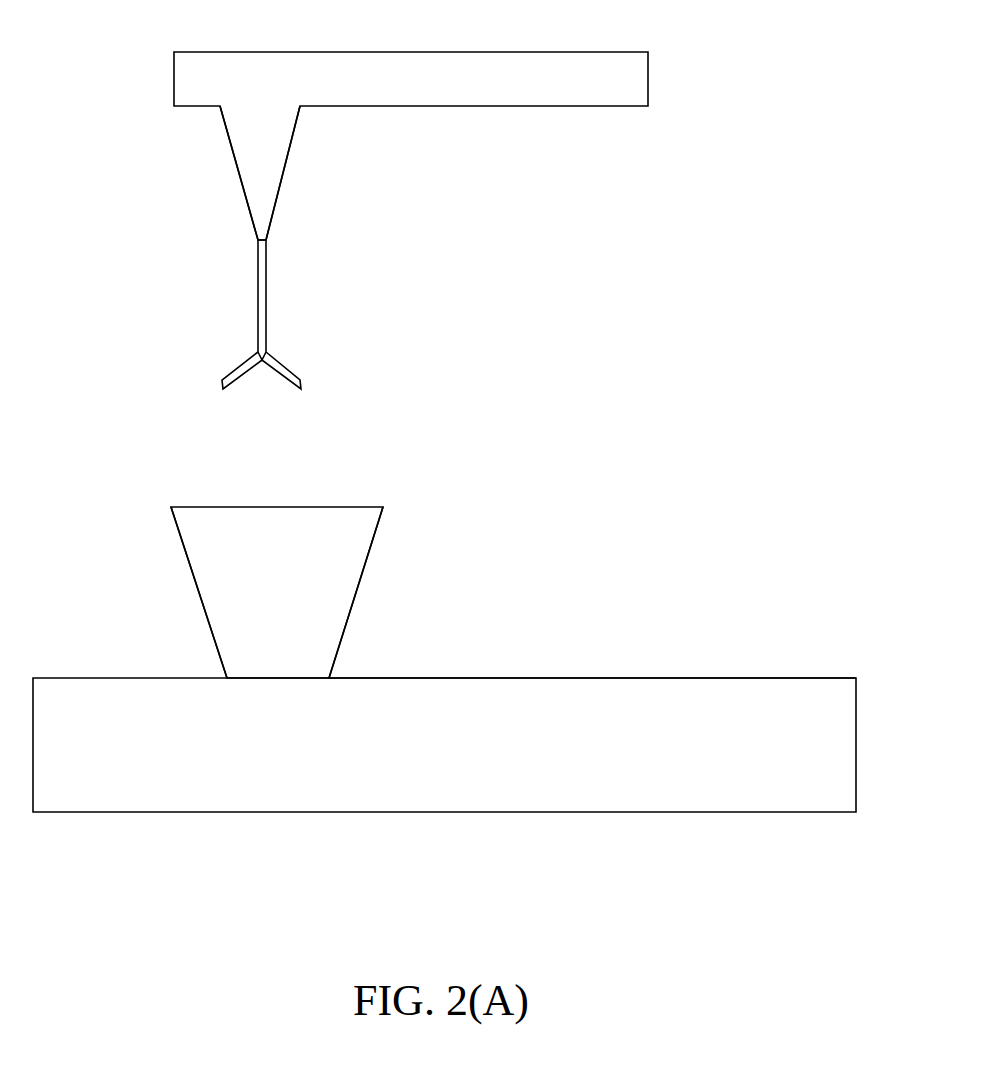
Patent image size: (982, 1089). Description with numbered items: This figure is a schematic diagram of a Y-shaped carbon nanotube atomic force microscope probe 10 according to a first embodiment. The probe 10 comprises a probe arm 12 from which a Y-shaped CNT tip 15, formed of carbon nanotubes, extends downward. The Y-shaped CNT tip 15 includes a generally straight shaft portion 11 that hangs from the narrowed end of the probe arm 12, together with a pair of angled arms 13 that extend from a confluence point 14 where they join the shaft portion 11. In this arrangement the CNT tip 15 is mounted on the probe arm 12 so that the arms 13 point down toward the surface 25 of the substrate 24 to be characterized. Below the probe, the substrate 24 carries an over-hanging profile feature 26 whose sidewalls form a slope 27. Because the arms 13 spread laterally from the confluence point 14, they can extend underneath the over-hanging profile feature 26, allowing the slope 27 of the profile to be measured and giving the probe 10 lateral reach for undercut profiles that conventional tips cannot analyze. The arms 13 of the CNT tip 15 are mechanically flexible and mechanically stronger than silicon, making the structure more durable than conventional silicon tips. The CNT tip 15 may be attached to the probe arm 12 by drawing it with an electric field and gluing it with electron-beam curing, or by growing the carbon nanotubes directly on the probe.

The Y-shaped CNT AFM probe 10 is at (680, 78).
The straight shaft portion 11 is at (263, 300).
The probe arm 12 is at (282, 152).
The angled arms 13 is at (226, 378).
The confluence point 14 is at (257, 353).
The Y-shaped CNT tip 15 is at (229, 294).
The substrate 24 is at (843, 772).
The surface 25 is at (806, 678).
The over-hanging profile feature 26 is at (360, 534).
The slope 27 is at (191, 572).